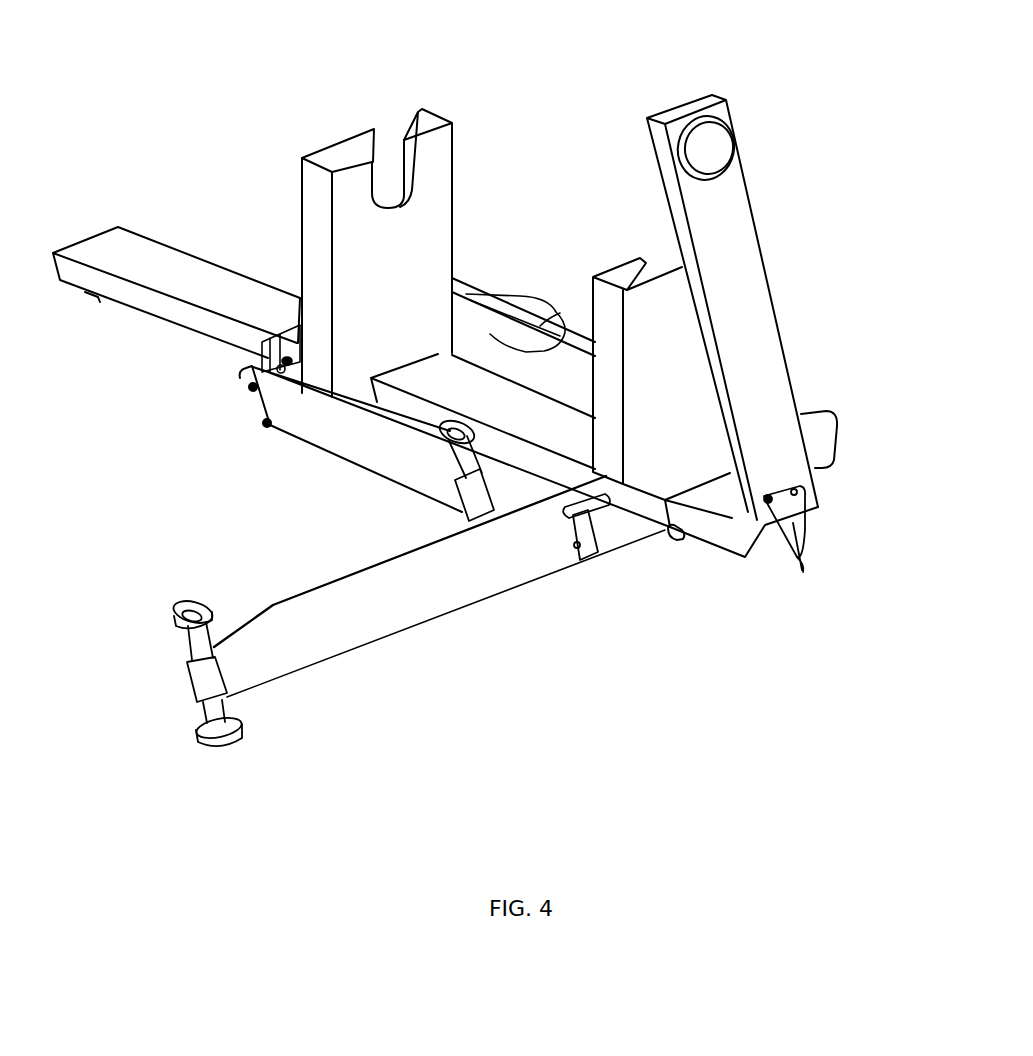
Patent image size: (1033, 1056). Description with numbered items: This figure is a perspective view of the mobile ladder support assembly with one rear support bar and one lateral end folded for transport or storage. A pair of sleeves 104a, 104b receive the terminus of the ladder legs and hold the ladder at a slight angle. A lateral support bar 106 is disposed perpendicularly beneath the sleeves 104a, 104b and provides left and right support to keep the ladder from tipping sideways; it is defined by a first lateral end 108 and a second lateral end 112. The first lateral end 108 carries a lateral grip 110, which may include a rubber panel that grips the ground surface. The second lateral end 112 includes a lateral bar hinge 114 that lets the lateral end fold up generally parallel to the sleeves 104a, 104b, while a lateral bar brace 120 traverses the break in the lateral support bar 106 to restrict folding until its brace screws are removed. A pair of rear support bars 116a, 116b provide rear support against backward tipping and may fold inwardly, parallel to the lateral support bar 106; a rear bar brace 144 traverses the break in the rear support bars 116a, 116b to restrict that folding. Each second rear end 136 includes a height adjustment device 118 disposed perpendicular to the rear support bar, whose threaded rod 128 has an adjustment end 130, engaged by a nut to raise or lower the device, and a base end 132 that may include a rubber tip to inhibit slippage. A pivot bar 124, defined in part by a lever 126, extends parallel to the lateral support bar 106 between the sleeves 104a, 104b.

The sleeve 104a is at (297, 230).
The sleeve 104b is at (640, 375).
The lateral support bar 106 is at (530, 440).
The first lateral end 108 is at (80, 240).
The lateral grip 110 is at (712, 138).
The second lateral end 112 is at (658, 118).
The lateral bar hinge 114 is at (268, 322).
The rear support bar 116a is at (377, 560).
The rear support bar 116b is at (340, 447).
The height adjustment device 118 is at (187, 655).
The lateral bar brace 120 is at (795, 555).
The pivot bar 124 is at (467, 295).
The lever 126 is at (550, 347).
The threaded rod 128 is at (212, 632).
The adjustment end 130 is at (190, 600).
The base end 132 is at (227, 746).
The second rear end 136 is at (462, 505).
The rear bar brace 144 is at (580, 513).